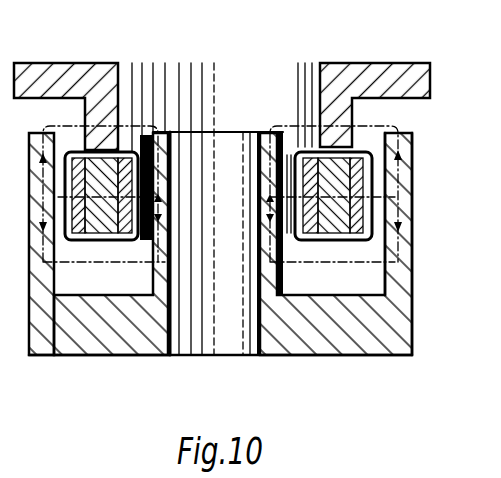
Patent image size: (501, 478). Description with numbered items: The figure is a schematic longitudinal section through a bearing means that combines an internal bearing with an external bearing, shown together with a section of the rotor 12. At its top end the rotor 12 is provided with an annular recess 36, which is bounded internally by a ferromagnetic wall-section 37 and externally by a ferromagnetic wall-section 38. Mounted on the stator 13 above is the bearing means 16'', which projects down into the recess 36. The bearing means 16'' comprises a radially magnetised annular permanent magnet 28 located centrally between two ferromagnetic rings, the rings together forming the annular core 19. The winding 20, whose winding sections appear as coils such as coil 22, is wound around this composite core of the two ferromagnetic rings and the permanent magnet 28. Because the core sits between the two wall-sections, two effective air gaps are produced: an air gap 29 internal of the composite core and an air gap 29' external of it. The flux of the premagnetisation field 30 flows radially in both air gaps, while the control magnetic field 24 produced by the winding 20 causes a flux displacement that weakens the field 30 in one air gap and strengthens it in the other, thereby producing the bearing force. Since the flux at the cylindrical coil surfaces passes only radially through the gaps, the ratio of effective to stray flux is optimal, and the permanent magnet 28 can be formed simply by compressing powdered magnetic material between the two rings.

The stator 13 is at (85, 77).
The bearing means 16'' is at (209, 226).
The winding 20 is at (31, 272).
The premagnetisation field 30 is at (36, 291).
The annular recess 36 is at (353, 288).
The rotor 12 is at (300, 336).
The ferromagnetic wall-section 38 is at (411, 223).
The control magnetic field 24 is at (39, 166).
The air gap 29' is at (355, 194).
The coil 22 is at (70, 232).
The permanent magnet 28 is at (101, 213).
The annular core 19 is at (316, 242).
The air gap 29 is at (294, 214).
The ferromagnetic wall-section 37 is at (264, 272).